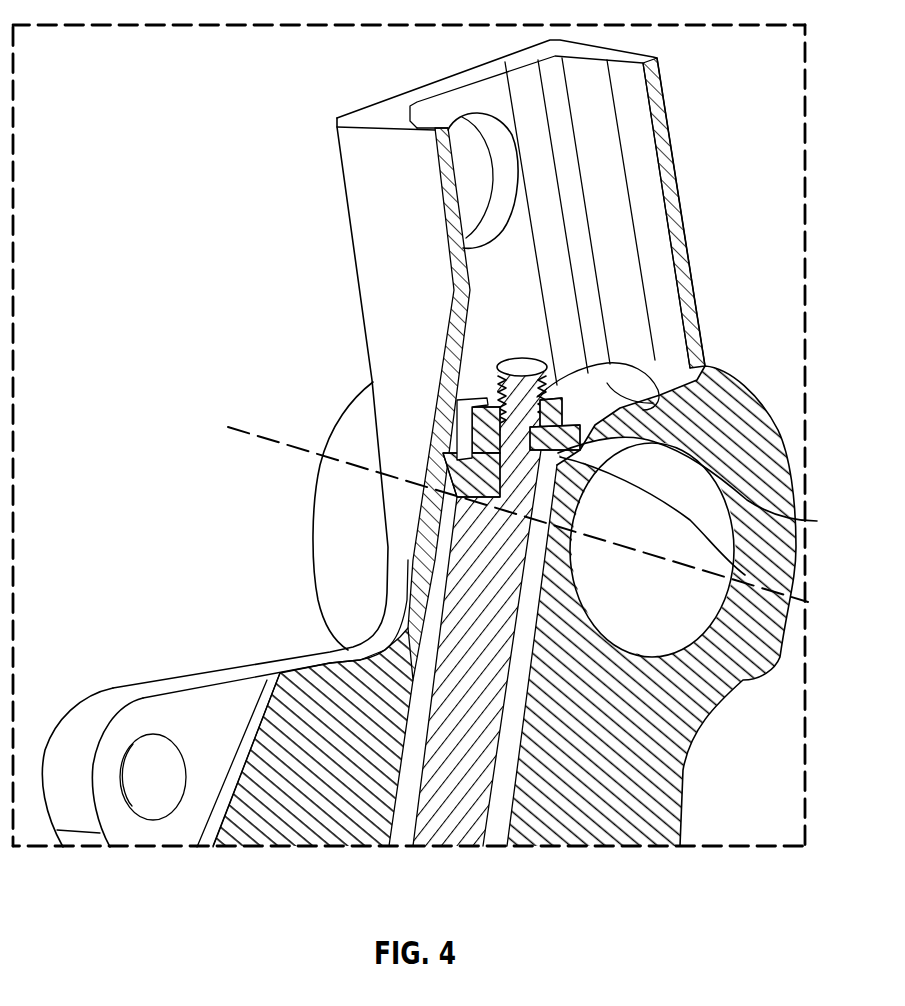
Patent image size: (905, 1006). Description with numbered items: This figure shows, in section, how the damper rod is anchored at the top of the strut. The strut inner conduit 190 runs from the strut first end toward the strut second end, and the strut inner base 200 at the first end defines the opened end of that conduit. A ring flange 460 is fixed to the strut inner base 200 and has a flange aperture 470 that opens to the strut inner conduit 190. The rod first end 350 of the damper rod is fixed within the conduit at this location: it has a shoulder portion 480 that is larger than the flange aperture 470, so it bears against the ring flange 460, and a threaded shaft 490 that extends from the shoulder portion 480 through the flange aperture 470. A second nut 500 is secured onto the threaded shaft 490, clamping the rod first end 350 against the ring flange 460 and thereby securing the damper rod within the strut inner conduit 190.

The strut inner conduit 190 is at (510, 787).
The strut inner base 200 is at (673, 393).
The rod first end 350 is at (437, 588).
The ring flange 460 is at (817, 521).
The flange aperture 470 is at (745, 575).
The shoulder portion 480 is at (470, 462).
The threaded shaft 490 is at (530, 400).
The second nut 500 is at (533, 425).